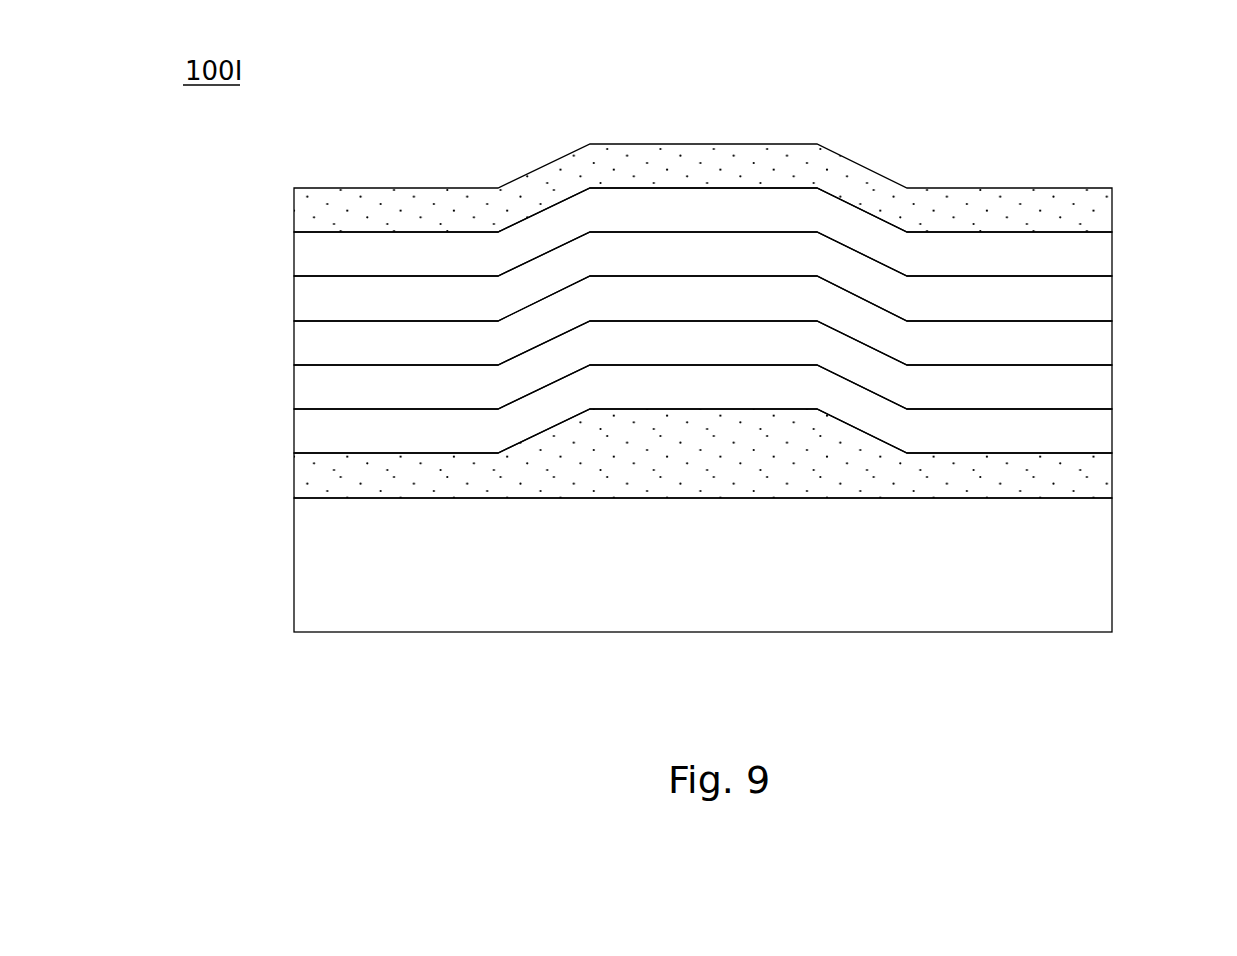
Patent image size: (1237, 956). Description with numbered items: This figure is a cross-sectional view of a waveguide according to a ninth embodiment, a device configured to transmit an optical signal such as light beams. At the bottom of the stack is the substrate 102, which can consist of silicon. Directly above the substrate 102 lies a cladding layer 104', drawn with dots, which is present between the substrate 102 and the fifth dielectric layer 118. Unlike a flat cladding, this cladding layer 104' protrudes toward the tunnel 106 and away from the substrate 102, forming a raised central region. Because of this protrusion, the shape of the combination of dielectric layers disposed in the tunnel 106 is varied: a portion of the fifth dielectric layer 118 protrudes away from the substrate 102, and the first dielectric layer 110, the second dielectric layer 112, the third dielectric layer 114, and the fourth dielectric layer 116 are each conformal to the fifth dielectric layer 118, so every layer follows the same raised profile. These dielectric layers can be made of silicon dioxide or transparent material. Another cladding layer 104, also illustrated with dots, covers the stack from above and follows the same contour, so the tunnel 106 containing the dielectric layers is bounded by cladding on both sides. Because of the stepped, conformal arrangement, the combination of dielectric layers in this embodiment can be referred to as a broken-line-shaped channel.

The substrate 102 is at (1102, 565).
The cladding layer 104 is at (758, 189).
The cladding layer 104' is at (762, 459).
The tunnel 106 is at (992, 214).
The first dielectric layer 110 is at (1102, 387).
The second dielectric layer 112 is at (1102, 342).
The third dielectric layer 114 is at (1102, 298).
The fourth dielectric layer 116 is at (1102, 253).
The fifth dielectric layer 118 is at (1102, 430).